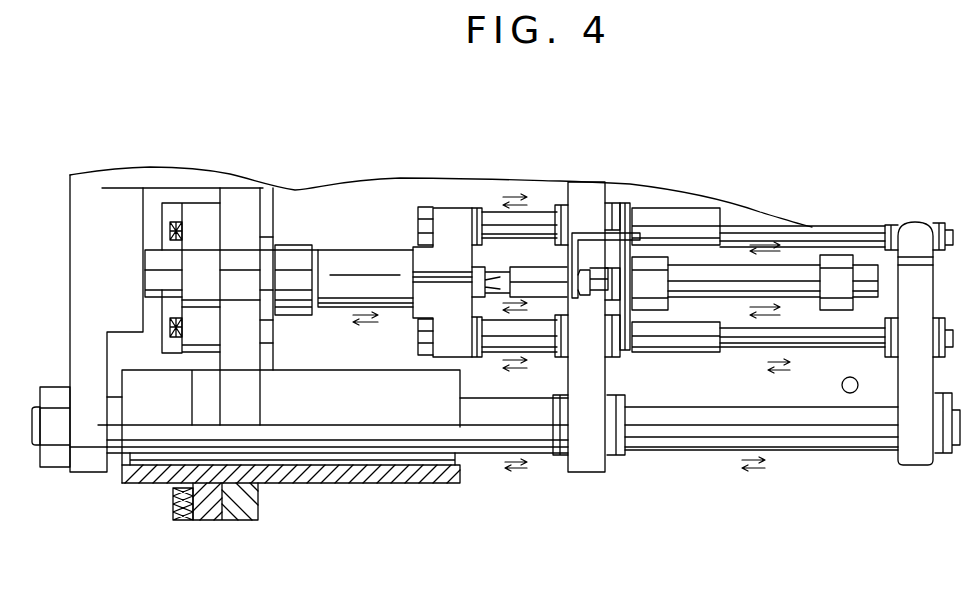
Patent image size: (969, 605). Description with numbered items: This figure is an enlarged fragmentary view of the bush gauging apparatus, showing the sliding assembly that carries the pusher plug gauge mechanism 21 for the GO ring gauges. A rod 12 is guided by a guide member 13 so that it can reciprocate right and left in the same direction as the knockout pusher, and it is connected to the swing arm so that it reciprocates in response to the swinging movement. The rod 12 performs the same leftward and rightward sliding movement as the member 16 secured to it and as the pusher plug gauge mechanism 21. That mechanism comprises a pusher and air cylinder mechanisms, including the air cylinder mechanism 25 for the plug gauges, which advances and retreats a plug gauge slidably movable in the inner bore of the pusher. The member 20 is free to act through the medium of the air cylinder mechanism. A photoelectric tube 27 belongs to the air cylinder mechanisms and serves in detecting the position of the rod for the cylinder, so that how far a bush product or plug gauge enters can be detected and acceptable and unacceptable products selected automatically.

The pusher plug gauge mechanism 21 is at (360, 245).
The photoelectric tube 27 is at (617, 213).
The air cylinder mechanism for the plug gauges 25 is at (803, 270).
The member 20 is at (838, 346).
The member 16 is at (827, 438).
The rod 12 is at (547, 450).
The guide member 13 is at (425, 485).